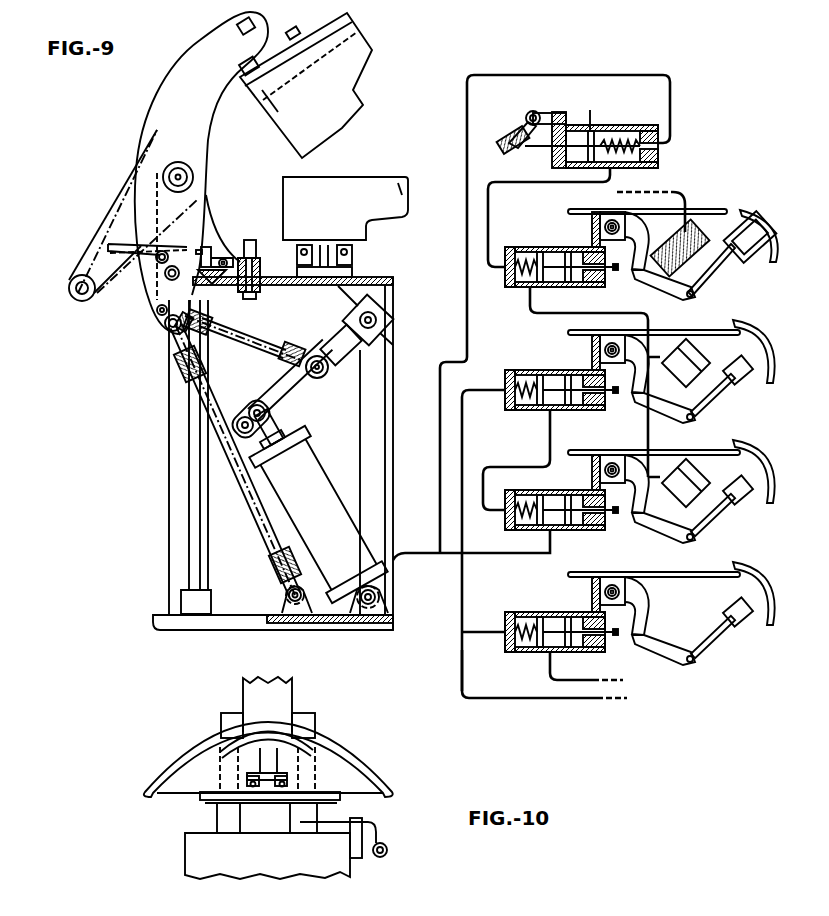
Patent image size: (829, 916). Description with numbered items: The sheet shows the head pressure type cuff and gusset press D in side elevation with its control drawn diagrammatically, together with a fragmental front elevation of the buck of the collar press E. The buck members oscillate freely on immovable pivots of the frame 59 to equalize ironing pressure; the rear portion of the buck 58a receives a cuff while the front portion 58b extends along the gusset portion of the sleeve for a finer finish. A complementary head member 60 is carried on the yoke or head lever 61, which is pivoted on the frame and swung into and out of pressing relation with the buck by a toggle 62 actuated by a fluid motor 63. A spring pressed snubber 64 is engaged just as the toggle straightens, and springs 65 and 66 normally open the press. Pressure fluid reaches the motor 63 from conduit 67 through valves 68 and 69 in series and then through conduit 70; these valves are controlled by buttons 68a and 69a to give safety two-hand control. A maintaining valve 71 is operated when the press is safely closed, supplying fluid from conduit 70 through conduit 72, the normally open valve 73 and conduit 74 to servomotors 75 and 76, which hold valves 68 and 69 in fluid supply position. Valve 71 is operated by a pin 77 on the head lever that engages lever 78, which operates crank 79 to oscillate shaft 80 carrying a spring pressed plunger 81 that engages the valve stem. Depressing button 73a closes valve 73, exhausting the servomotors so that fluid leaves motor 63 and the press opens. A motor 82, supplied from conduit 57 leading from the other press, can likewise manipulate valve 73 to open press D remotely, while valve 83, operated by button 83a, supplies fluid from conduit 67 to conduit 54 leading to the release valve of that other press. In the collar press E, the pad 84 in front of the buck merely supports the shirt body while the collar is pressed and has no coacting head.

In FIG. 9, the conduit 54 is at (592, 682).
In FIG. 9, the conduit 57 is at (676, 193).
In FIG. 9, the rear portion of the buck 58a is at (292, 206).
In FIG. 9, the front portion of the buck 58b is at (394, 180).
In FIG. 9, the frame 59 is at (192, 430).
In FIG. 9, the head member 60 is at (358, 60).
In FIG. 9, the head lever 61 is at (152, 116).
In FIG. 9, the toggle 62 is at (298, 383).
In FIG. 9, the fluid motor 63 is at (308, 504).
In FIG. 9, the spring pressed snubber 64 is at (258, 295).
In FIG. 9, the spring 65 is at (282, 357).
In FIG. 9, the spring 66 is at (175, 368).
In FIG. 9, the conduit 67 is at (545, 699).
In FIG. 9, the valve 68 is at (586, 412).
In FIG. 9, the button 68a is at (754, 338).
In FIG. 9, the valve 69 is at (586, 532).
In FIG. 9, the button 69a is at (758, 458).
In FIG. 9, the conduit 70 is at (449, 556).
In FIG. 9, the maintaining valve 71 is at (604, 118).
In FIG. 9, the conduit 72 is at (549, 217).
In FIG. 9, the normally open valve 73 is at (553, 246).
In FIG. 9, the button 73a is at (762, 212).
In FIG. 9, the conduit 74 is at (601, 315).
In FIG. 9, the servomotor 75 is at (700, 394).
In FIG. 9, the servomotor 76 is at (700, 514).
In FIG. 9, the pin 77 is at (168, 276).
In FIG. 9, the lever 78 is at (108, 246).
In FIG. 9, the crank 79 is at (224, 257).
In FIG. 9, the shaft 80 is at (228, 282).
In FIG. 9, the spring pressed plunger 81 is at (520, 132).
In FIG. 9, the motor 82 is at (671, 261).
In FIG. 9, the valve 83 is at (549, 619).
In FIG. 9, the button 83a is at (758, 580).
In FIG. 10, the pad 84 is at (318, 745).
In FIG. 9, the cuff and gusset press D is at (379, 132).
In FIG. 10, the collar press E is at (168, 760).